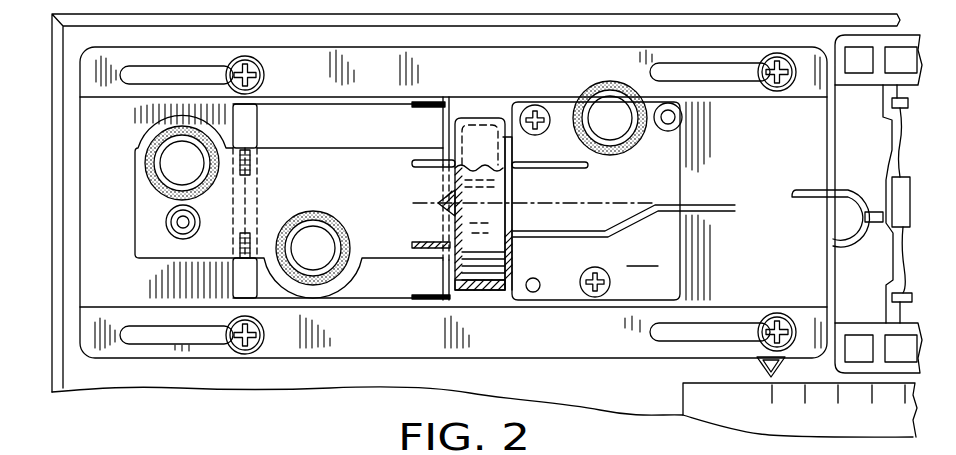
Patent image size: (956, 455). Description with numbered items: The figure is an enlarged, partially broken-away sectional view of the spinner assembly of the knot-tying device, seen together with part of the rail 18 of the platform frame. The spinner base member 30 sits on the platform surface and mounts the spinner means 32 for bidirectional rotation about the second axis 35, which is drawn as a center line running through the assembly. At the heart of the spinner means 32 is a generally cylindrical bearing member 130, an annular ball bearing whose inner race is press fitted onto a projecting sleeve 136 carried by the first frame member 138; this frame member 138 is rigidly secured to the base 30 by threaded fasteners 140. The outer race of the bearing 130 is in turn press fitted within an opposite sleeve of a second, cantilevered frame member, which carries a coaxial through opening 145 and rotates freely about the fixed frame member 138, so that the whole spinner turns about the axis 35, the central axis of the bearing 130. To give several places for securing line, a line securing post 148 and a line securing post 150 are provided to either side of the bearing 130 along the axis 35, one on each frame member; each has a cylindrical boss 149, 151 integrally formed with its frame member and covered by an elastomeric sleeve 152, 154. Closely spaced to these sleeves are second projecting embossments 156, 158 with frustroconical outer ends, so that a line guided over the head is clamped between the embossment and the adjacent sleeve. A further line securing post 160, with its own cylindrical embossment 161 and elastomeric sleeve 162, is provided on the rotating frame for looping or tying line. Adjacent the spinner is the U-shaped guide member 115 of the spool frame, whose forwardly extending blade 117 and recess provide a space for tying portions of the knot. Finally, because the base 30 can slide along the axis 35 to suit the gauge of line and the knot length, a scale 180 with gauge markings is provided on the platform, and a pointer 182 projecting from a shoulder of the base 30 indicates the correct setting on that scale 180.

The guide rail 18 is at (56, 12).
The spinner base member 30 is at (68, 59).
The spinner means 32 is at (450, 82).
The second axis 35 is at (672, 203).
The U-shaped guide member 115 is at (866, 212).
The blade 117 is at (800, 190).
The bearing member 130 is at (488, 100).
The projecting sleeve 136 is at (508, 205).
The first frame member 138 is at (481, 292).
The threaded fasteners 140 is at (606, 297).
The through opening 145 is at (440, 198).
The line securing post 148 is at (147, 146).
The cylindrical boss 149 is at (197, 175).
The line securing post 150 is at (615, 64).
The cylindrical boss 151 is at (624, 130).
The elastomeric sleeve 152 is at (146, 170).
The elastomeric sleeve 154 is at (596, 72).
The second projecting embossment 156 is at (166, 222).
The second projecting embossment 158 is at (683, 117).
The line securing post 160 is at (332, 200).
The cylindrical embossment 161 is at (328, 260).
The elastomeric sleeve 162 is at (351, 238).
The scale 180 is at (735, 408).
The pointer 182 is at (757, 365).